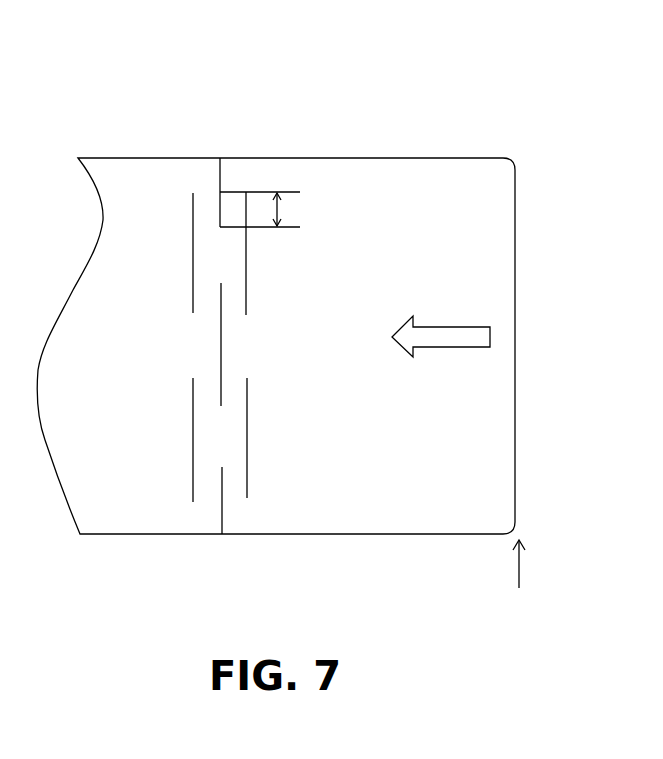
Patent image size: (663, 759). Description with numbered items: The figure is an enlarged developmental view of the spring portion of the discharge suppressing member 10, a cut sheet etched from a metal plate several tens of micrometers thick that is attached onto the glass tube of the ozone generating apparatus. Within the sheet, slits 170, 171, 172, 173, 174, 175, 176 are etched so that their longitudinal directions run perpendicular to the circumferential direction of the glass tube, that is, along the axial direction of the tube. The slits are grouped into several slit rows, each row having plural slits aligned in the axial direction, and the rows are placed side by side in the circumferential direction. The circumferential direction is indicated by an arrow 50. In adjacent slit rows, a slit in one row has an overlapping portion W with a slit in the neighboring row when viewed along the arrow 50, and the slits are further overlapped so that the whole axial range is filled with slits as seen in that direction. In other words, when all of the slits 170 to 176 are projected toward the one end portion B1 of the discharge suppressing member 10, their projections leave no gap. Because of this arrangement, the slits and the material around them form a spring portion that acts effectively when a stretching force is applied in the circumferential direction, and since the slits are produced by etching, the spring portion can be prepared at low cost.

The discharge suppressing member 10 is at (260, 46).
The slit 170 is at (216, 173).
The slit 171 is at (246, 258).
The slit 172 is at (193, 247).
The slit 173 is at (221, 326).
The slit 174 is at (247, 414).
The slit 175 is at (193, 427).
The slit 176 is at (222, 505).
The arrow 50 is at (450, 318).
The overlapping portion W is at (301, 209).
The one end portion B1 is at (518, 578).